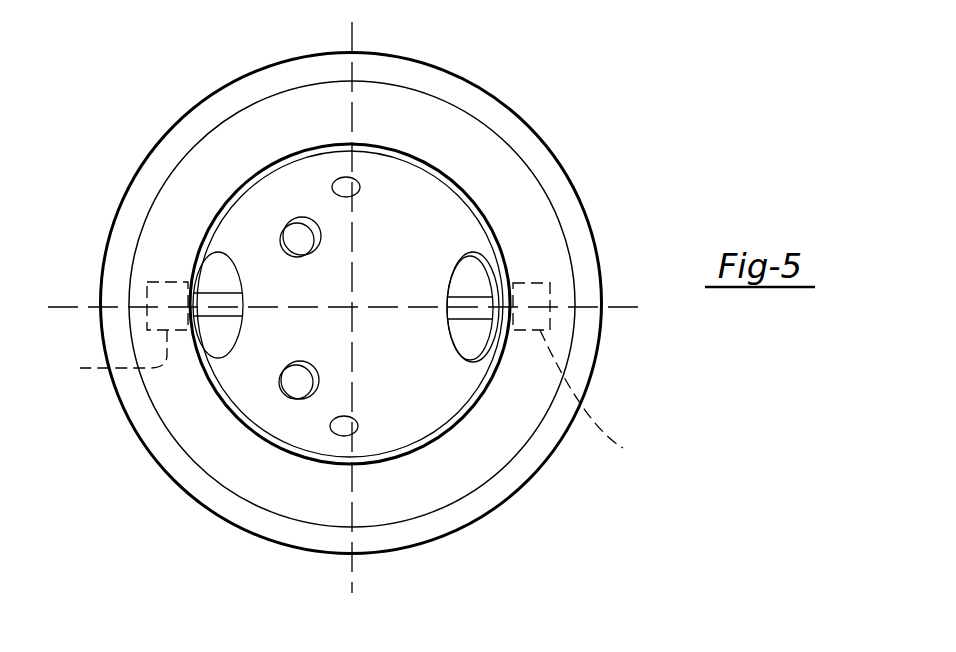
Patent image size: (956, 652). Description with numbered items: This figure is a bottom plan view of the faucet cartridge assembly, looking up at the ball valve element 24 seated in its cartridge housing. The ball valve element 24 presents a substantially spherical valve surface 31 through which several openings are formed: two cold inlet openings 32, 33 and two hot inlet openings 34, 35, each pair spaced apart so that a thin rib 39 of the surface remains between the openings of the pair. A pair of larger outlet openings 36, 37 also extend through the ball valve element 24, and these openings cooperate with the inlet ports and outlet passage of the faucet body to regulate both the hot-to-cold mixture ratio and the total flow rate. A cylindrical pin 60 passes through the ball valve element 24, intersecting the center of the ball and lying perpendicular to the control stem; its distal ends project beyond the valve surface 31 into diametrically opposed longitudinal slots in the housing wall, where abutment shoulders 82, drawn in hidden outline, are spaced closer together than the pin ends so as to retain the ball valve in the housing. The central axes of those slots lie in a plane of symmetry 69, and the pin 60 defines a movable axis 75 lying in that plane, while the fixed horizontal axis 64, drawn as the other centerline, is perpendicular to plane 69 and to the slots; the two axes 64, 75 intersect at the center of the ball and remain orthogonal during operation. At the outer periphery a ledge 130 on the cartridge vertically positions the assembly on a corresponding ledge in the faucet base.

The ball valve element 24 is at (478, 201).
The spherical valve surface 31 is at (453, 403).
The cold inlet opening 32 is at (290, 393).
The cold inlet opening 33 is at (337, 433).
The hot inlet opening 34 is at (295, 237).
The hot inlet opening 35 is at (334, 182).
The outlet opening 36 is at (200, 283).
The outlet opening 37 is at (497, 370).
The thin rib 39 is at (310, 200).
The cylindrical pin 60 is at (467, 313).
The fixed horizontal axis 64 is at (355, 38).
The plane of symmetry 69 is at (608, 307).
The pin axis 75 is at (630, 308).
The abutment shoulder 82 is at (356, 371).
The ledge 130 is at (480, 513).